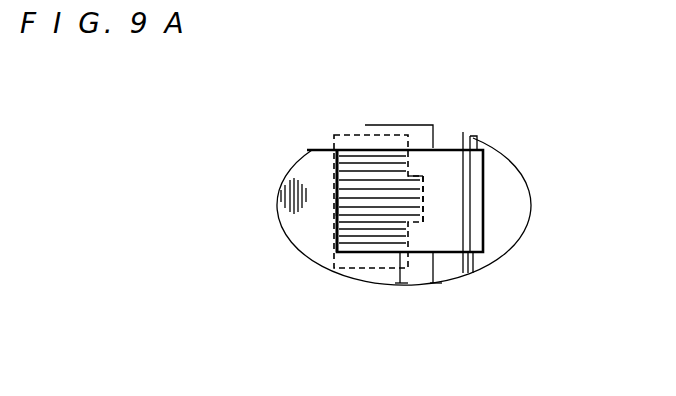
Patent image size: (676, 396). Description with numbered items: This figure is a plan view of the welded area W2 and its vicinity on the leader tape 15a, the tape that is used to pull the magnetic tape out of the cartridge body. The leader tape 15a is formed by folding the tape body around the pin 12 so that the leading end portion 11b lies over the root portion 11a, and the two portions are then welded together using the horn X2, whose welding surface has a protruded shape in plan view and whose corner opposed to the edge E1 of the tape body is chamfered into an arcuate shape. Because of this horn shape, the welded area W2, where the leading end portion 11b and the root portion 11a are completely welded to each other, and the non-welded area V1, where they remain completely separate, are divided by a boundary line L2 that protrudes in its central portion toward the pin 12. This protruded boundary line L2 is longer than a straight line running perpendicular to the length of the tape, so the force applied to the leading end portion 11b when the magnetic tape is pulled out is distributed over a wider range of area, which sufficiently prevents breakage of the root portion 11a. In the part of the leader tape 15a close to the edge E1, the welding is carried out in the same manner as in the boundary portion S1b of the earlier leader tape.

The leader tape 15a is at (337, 88).
The horn X2 is at (365, 125).
The welded area W2 is at (379, 180).
The pin 12 is at (468, 133).
The edge E1 is at (336, 180).
The non-welded area V1 is at (431, 192).
The boundary portion S1b is at (338, 208).
The boundary line L2 is at (423, 211).
The leading end portion 11b is at (357, 243).
The root portion 11a is at (388, 260).